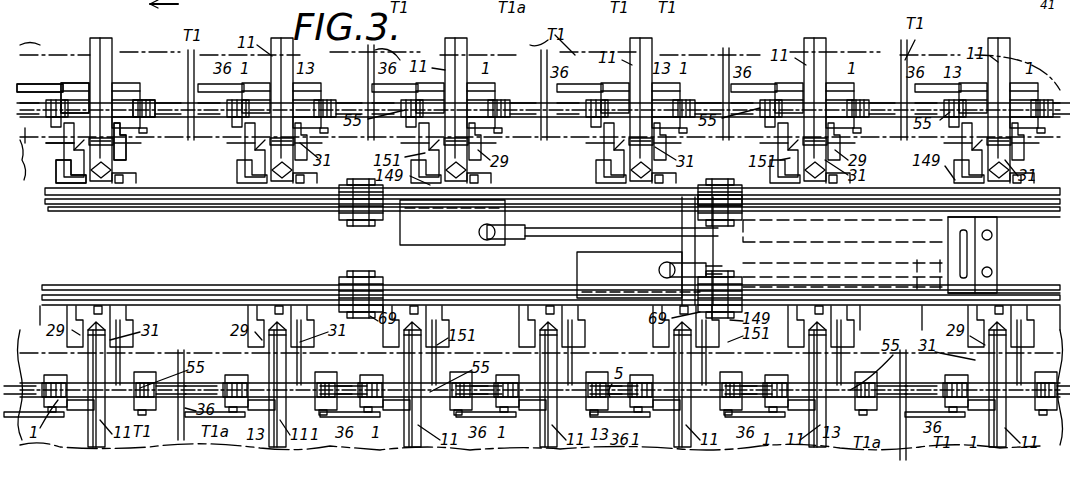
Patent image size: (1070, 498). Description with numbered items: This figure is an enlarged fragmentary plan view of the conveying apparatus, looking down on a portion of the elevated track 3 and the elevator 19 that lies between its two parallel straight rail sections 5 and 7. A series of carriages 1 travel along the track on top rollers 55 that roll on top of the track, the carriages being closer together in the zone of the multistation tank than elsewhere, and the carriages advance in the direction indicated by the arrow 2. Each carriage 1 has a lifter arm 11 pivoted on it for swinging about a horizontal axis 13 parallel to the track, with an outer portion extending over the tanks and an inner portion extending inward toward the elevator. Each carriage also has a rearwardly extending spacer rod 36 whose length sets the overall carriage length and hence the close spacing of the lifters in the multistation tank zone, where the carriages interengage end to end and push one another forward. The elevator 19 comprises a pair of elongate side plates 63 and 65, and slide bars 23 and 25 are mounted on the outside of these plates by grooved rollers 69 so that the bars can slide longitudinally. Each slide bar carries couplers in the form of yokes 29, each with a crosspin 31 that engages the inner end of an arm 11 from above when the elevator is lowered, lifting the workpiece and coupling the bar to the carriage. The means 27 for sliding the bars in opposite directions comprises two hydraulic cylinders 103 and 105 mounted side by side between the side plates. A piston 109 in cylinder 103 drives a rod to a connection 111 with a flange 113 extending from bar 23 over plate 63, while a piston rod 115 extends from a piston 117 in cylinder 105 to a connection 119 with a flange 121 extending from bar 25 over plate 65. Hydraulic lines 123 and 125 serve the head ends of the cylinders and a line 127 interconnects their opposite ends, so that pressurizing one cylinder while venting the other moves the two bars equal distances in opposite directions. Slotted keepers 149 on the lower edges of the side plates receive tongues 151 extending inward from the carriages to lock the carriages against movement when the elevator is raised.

The carriage 1 is at (138, 84).
The direction arrow 2 is at (168, 7).
The elevated track 3 is at (346, 98).
The straight rail section 5 is at (488, 306).
The straight rail section 7 is at (523, 100).
The arm 11 is at (92, 55).
The horizontal pivot axis 13 is at (117, 84).
The elevator 19 is at (218, 196).
The slide bar 23 is at (188, 300).
The slide bar 25 is at (515, 200).
The means for effecting longitudinal sliding movement of the slide bars 27 is at (988, 244).
The yoke 29 is at (115, 150).
The crosspin 31 is at (120, 140).
The spacer rod 36 is at (45, 82).
The top roller 55 is at (148, 110).
The elevator side plate 63 is at (132, 286).
The elevator side plate 65 is at (120, 210).
The upper grooved roller 69 is at (348, 208).
The hydraulic cylinder 103 is at (872, 300).
The hydraulic cylinder 105 is at (903, 230).
The piston 109 is at (915, 295).
The connection 111 is at (660, 272).
The flange 113 is at (577, 280).
The piston rod 115 is at (573, 233).
The piston 117 is at (740, 200).
The connection 119 is at (488, 240).
The flange 121 is at (442, 238).
The hydraulic line 123 is at (672, 264).
The hydraulic line 125 is at (720, 215).
The hydraulic line 127 is at (993, 272).
The slotted keeper 149 is at (56, 180).
The tongue 151 is at (46, 143).